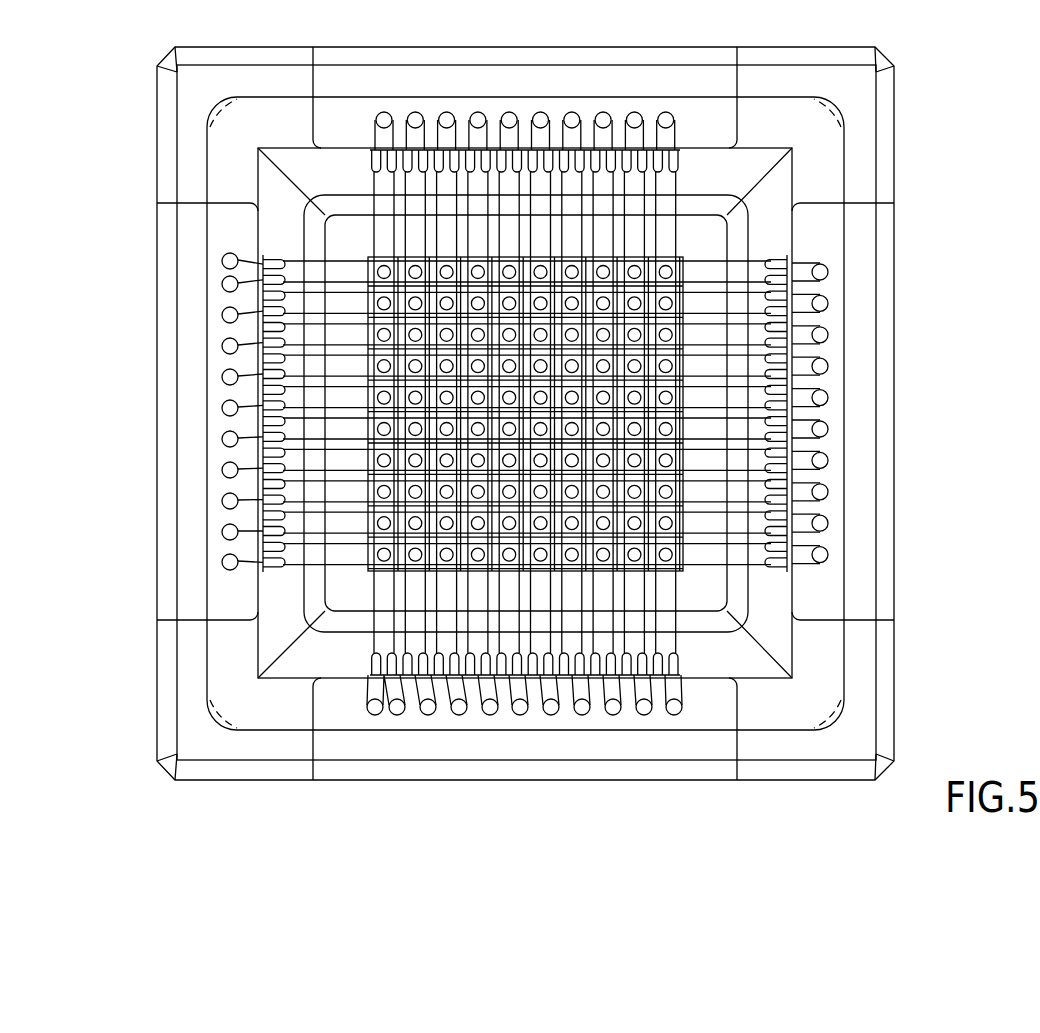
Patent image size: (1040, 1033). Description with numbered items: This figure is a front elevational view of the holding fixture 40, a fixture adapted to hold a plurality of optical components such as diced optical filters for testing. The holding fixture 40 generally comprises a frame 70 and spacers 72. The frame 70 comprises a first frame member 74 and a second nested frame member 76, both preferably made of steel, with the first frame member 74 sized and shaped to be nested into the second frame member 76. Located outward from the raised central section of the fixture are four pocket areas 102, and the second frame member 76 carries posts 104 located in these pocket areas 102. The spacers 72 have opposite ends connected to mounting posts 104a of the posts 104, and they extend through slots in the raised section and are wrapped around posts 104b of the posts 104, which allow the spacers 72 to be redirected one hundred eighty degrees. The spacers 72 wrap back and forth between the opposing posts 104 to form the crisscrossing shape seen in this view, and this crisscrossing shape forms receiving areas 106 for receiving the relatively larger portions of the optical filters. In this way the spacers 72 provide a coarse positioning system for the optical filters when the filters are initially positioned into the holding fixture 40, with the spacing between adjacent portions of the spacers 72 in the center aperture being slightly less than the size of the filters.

The holding fixture 40 is at (935, 78).
The frame 70 is at (894, 150).
The spacers 72 is at (673, 248).
The first frame member 74 is at (708, 585).
The second nested frame member 76 is at (895, 493).
The pocket areas 102 is at (833, 382).
The posts 104 is at (828, 298).
The mounting posts 104a is at (224, 258).
The posts 104b is at (223, 350).
The receiving areas 106 is at (367, 262).